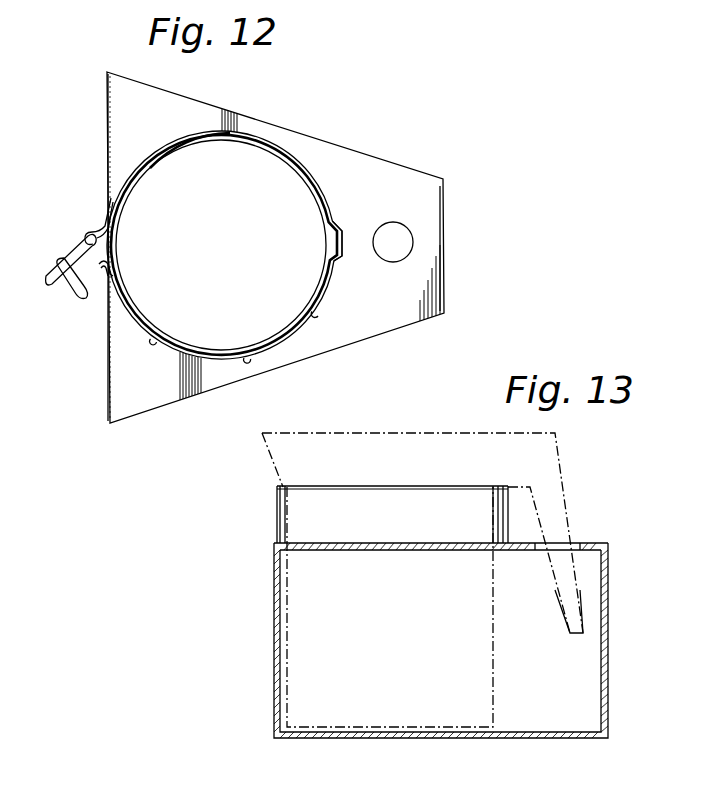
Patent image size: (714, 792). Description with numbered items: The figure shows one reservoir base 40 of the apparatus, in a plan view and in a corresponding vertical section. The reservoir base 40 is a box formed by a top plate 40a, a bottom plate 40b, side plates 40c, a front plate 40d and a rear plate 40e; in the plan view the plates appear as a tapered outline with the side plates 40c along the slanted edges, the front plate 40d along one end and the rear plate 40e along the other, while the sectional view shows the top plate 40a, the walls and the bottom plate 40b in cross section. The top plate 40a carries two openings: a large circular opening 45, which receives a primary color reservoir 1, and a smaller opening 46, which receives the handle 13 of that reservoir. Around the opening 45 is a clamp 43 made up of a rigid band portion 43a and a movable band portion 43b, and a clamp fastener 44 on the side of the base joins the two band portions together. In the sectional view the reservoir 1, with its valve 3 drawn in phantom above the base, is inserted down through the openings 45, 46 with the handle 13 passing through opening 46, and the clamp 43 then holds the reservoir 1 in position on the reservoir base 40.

In FIG. 13, the primary color reservoir 1 is at (496, 621).
In FIG. 13, the valve 3 is at (377, 431).
In FIG. 13, the handle 13 is at (569, 490).
In FIG. 12, the reservoir base 40 is at (358, 184).
In FIG. 12, the top plate 40a is at (412, 180).
In FIG. 13, the top plate 40a is at (598, 546).
In FIG. 13, the bottom plate 40b is at (527, 738).
In FIG. 12, the side plates 40c is at (297, 127).
In FIG. 13, the side plates 40c is at (547, 667).
In FIG. 12, the front plate 40d is at (108, 352).
In FIG. 13, the front plate 40d is at (274, 637).
In FIG. 12, the rear plate 40e is at (445, 275).
In FIG. 13, the rear plate 40e is at (608, 656).
In FIG. 12, the clamp 43 is at (118, 183).
In FIG. 13, the clamp 43 is at (277, 516).
In FIG. 12, the rigid band portion 43a is at (165, 342).
In FIG. 12, the movable band portion 43b is at (150, 163).
In FIG. 12, the clamp fastener 44 is at (60, 260).
In FIG. 12, the opening 45 is at (318, 275).
In FIG. 13, the opening 45 is at (398, 544).
In FIG. 12, the opening 46 is at (397, 232).
In FIG. 13, the opening 46 is at (556, 540).